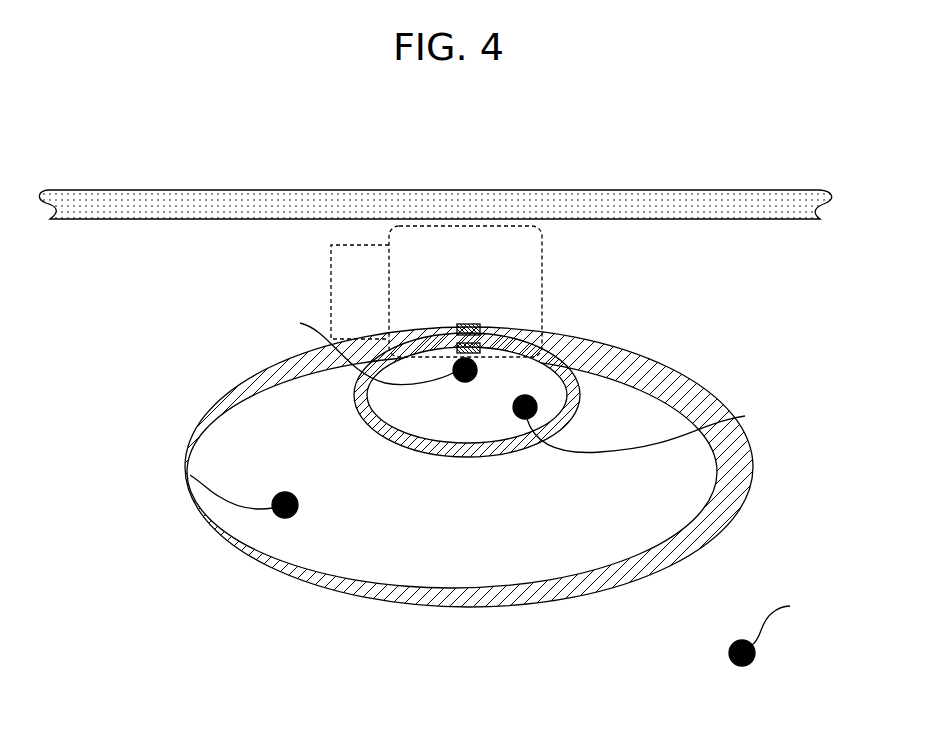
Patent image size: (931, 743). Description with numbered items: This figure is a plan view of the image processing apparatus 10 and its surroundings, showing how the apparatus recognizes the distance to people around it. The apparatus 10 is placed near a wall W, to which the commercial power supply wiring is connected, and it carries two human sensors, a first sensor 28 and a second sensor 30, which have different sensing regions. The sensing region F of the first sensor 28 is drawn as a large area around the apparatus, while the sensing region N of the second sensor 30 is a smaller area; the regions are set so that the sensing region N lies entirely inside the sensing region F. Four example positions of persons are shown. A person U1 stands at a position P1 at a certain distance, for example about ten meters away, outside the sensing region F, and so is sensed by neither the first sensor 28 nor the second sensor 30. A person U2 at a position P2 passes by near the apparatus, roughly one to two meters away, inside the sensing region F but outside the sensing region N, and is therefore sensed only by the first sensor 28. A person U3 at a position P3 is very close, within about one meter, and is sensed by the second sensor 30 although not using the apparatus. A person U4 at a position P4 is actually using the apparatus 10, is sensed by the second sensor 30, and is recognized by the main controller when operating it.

The wall W is at (745, 219).
The image processing apparatus 10 is at (544, 271).
The first sensor 28 is at (455, 330).
The second sensor 30 is at (483, 348).
The sensing region of the second sensor N is at (562, 364).
The sensing region of the first sensor F is at (653, 352).
The position P1 is at (725, 663).
The position P2 is at (303, 512).
The position P3 is at (507, 419).
The position P4 is at (483, 376).
The person U1 is at (790, 606).
The person U2 is at (190, 475).
The person U3 is at (745, 416).
The person U4 is at (300, 323).